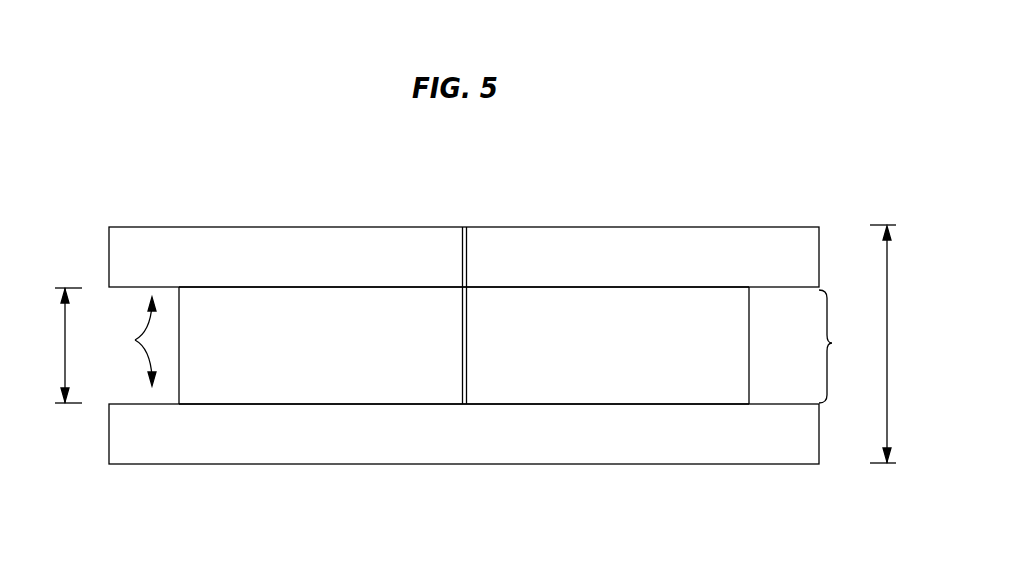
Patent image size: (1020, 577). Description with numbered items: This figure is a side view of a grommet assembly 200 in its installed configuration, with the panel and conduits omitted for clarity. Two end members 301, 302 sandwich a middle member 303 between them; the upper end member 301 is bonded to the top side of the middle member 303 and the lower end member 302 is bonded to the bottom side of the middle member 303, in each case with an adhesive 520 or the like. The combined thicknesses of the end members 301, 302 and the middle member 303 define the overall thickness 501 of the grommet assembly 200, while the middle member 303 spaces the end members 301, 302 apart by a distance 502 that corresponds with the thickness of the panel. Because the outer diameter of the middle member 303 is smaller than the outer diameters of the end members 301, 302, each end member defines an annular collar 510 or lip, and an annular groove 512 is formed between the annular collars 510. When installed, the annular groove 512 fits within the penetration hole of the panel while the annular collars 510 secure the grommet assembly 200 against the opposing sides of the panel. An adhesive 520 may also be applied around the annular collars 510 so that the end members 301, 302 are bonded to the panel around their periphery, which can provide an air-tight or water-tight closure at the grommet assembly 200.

The grommet assembly 200 is at (721, 131).
The end member 301 is at (590, 227).
The end member 302 is at (615, 464).
The middle member 303 is at (384, 322).
The thickness 501 is at (888, 247).
The distance 502 is at (63, 376).
The annular collar 510 is at (135, 340).
The annular groove 512 is at (846, 346).
The adhesive 520 is at (288, 287).